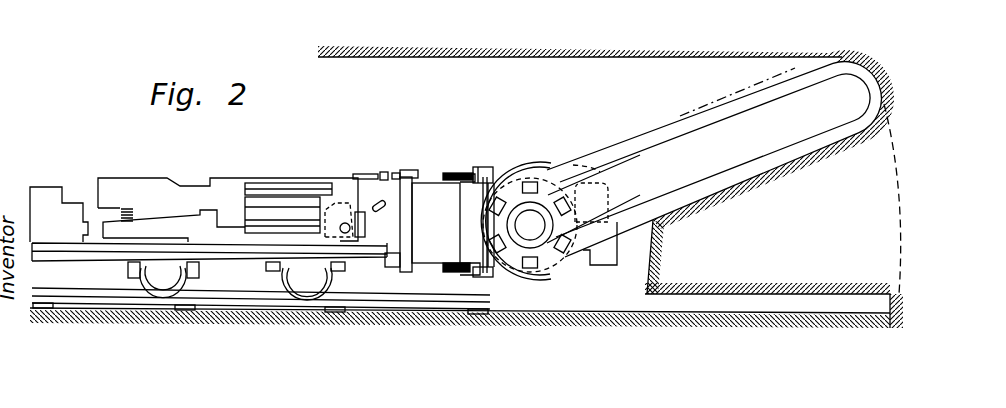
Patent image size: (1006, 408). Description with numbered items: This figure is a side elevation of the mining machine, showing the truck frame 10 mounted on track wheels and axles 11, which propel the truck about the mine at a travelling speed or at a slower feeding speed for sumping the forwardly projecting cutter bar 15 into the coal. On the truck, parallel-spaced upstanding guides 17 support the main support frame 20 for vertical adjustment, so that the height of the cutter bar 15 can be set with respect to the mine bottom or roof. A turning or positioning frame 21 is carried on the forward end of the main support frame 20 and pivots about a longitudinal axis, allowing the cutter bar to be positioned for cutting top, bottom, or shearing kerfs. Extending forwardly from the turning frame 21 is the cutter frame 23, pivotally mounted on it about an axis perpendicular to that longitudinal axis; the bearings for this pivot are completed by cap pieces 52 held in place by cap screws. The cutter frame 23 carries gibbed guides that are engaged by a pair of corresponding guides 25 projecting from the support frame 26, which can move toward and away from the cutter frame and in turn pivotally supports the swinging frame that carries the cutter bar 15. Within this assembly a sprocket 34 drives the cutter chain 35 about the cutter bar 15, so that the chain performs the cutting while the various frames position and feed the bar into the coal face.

The truck frame 10 is at (108, 263).
The track wheels and axles 11 is at (283, 288).
The cutter bar 15 is at (863, 100).
The upstanding guides 17 is at (290, 183).
The main support frame 20 is at (372, 175).
The turning frame 21 is at (428, 255).
The cutter frame 23 is at (484, 185).
The guides 25 is at (493, 173).
The support frame 26 is at (558, 273).
The sprocket 34 is at (608, 178).
The cutter chain 35 is at (537, 177).
The cap piece 52 is at (473, 175).